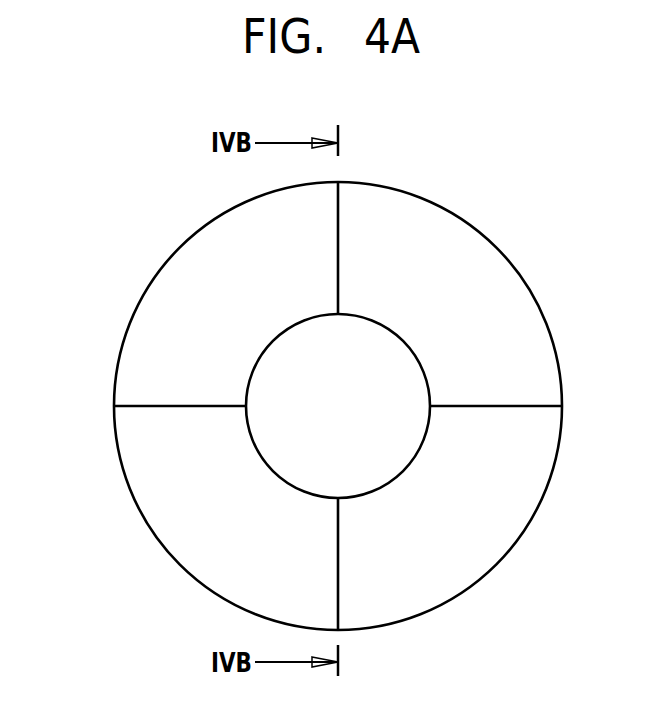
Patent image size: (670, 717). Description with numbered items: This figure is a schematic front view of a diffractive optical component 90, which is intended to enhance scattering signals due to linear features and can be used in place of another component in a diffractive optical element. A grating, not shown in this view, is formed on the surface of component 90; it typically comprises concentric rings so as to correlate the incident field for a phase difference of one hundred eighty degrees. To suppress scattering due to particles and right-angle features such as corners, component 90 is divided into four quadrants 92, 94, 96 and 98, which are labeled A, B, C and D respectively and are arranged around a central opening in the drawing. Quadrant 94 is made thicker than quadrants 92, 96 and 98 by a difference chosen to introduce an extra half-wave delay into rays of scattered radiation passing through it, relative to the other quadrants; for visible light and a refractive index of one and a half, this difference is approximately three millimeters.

The diffractive component 90 is at (137, 167).
The quadrant A 92 is at (143, 296).
The quadrant B 94 is at (451, 211).
The quadrant C 96 is at (535, 520).
The quadrant D 98 is at (133, 498).